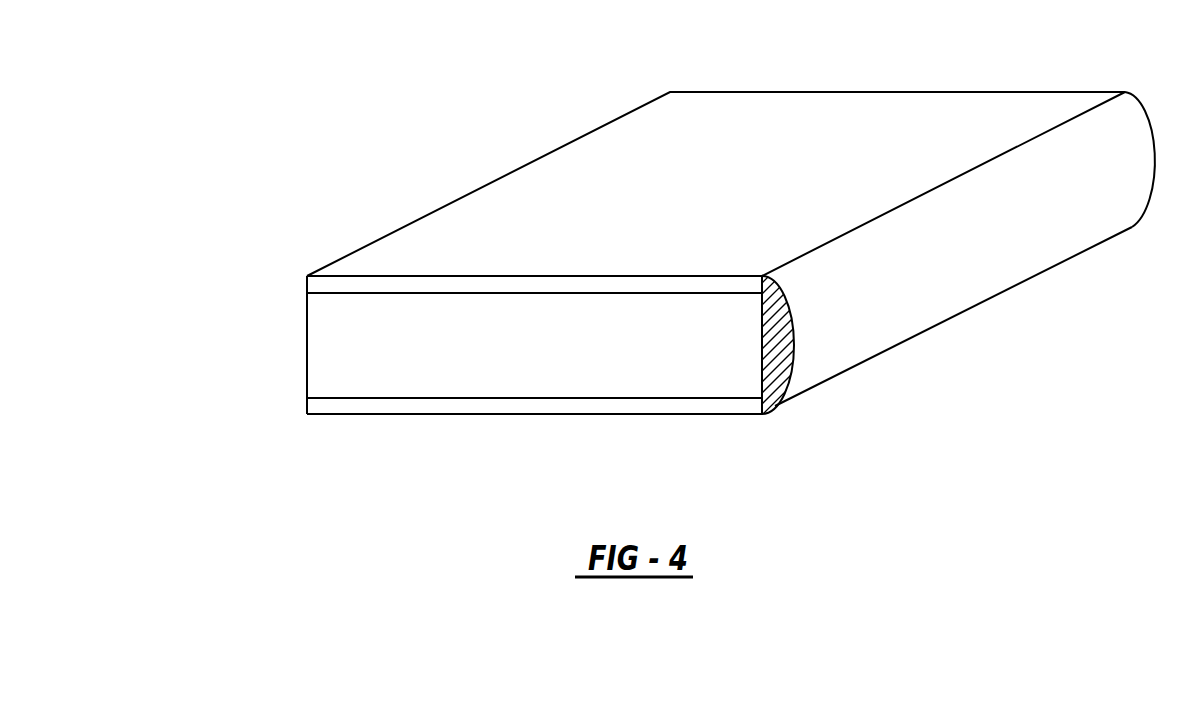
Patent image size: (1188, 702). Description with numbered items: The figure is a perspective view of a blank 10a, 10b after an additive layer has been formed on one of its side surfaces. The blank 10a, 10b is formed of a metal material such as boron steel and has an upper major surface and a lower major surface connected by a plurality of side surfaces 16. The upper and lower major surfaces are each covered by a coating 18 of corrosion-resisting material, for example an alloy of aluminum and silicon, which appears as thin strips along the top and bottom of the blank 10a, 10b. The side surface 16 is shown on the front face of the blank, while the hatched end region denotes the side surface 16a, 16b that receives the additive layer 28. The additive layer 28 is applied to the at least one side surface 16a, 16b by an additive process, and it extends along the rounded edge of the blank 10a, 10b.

The blank 10a is at (716, 156).
The blank 10b is at (446, 118).
The side surface 16 is at (307, 354).
The side surface 16a is at (594, 351).
The side surface 16b is at (760, 346).
The coating 18 is at (574, 283).
The additive layer 28 is at (1035, 233).